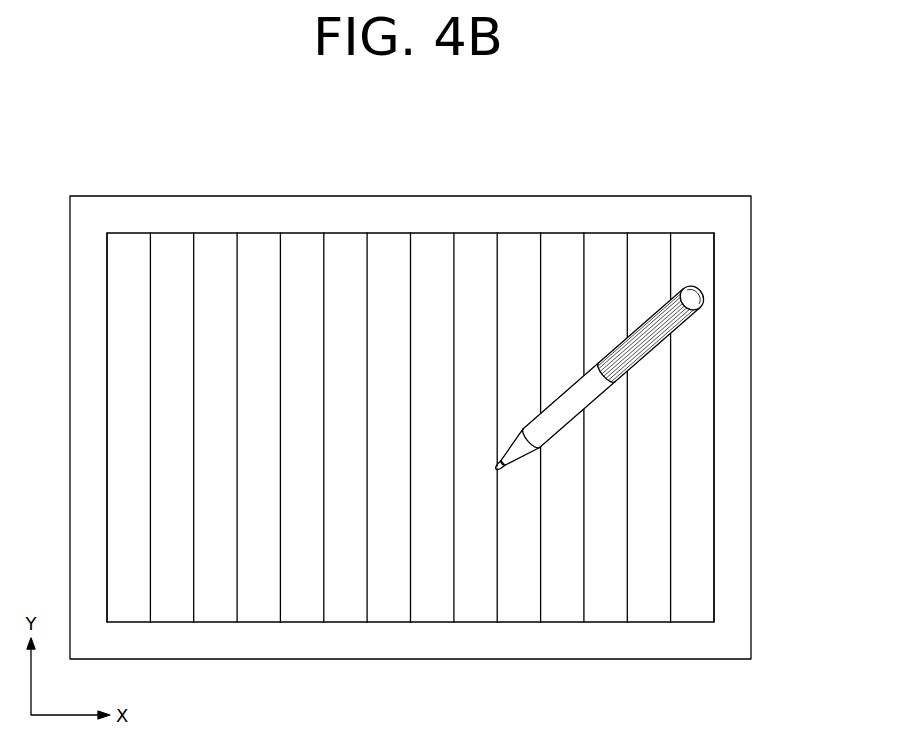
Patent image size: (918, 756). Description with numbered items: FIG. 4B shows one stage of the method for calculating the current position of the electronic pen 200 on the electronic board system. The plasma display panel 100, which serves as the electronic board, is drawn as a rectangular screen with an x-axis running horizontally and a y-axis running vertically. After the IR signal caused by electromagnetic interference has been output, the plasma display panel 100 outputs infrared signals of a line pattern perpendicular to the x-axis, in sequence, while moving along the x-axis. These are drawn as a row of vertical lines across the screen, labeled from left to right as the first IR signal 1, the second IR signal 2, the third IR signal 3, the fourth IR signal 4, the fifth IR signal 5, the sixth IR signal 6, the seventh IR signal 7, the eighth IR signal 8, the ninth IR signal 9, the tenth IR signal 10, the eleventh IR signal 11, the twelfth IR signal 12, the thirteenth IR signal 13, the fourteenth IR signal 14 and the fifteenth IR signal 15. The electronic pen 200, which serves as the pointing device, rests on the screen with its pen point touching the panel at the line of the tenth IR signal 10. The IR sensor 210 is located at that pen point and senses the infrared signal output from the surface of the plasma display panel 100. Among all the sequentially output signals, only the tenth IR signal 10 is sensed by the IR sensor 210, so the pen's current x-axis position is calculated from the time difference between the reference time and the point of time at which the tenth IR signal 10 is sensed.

The plasma display panel 100 is at (88, 195).
The electronic pen 200 is at (647, 348).
The IR sensor 210 is at (500, 471).
The first IR signal 1 is at (107, 247).
The second IR signal 2 is at (150, 247).
The third IR signal 3 is at (194, 247).
The fourth IR signal 4 is at (237, 247).
The fifth IR signal 5 is at (280, 247).
The sixth IR signal 6 is at (324, 247).
The seventh IR signal 7 is at (367, 247).
The eighth IR signal 8 is at (410, 247).
The ninth IR signal 9 is at (454, 247).
The tenth IR signal 10 is at (497, 247).
The eleventh IR signal 11 is at (541, 247).
The twelfth IR signal 12 is at (584, 247).
The thirteenth IR signal 13 is at (627, 247).
The fourteenth IR signal 14 is at (671, 247).
The fifteenth IR signal 15 is at (714, 247).